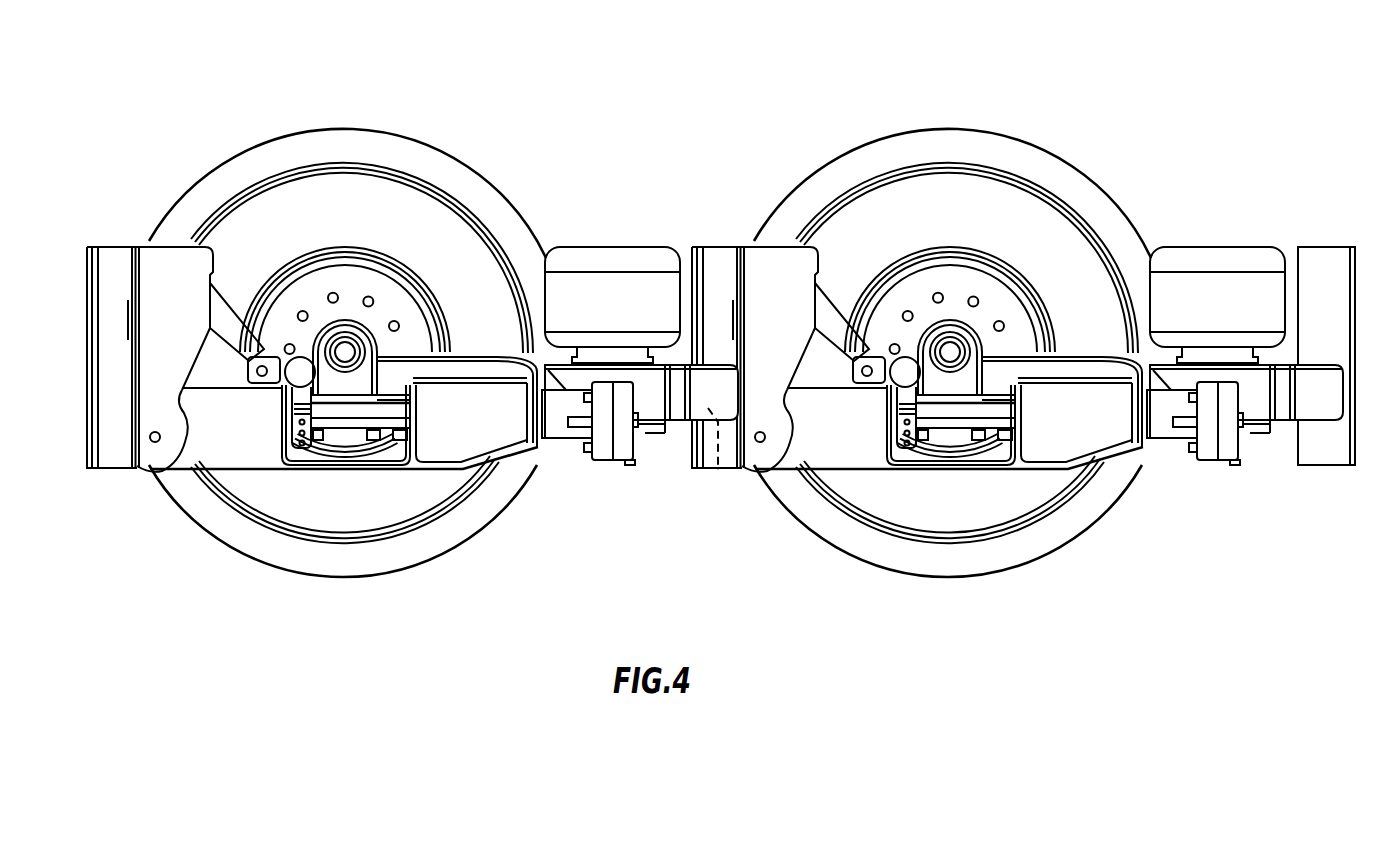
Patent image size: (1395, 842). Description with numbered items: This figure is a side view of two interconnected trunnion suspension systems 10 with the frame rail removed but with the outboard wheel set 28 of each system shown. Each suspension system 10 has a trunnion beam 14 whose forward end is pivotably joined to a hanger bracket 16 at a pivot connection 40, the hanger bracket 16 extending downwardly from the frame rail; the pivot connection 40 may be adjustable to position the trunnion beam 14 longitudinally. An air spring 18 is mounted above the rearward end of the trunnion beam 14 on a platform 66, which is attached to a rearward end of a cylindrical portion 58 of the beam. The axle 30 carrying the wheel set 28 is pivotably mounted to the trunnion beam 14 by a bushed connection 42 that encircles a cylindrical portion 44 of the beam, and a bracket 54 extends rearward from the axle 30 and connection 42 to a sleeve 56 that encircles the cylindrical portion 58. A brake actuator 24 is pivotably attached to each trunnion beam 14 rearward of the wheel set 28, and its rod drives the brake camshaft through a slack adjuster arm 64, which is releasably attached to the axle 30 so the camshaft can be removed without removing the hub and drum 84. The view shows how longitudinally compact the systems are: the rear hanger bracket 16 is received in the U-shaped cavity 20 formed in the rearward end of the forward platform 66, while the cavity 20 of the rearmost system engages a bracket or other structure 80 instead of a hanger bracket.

The suspension system 10 is at (277, 117).
The trunnion beam 14 is at (441, 475).
The hanger bracket 16 is at (135, 247).
The air spring 18 is at (624, 247).
The U-shaped cavity 20 is at (718, 470).
The brake actuator 24 is at (610, 462).
The outboard wheel set 28 is at (468, 166).
The axle 30 is at (350, 333).
The pivot connection 40 is at (155, 443).
The bushed connection 42 is at (347, 447).
The cylindrical portion 44 is at (299, 448).
The bracket 54 is at (498, 355).
The sleeve 56 is at (590, 446).
The cylindrical portion 58 is at (537, 442).
The slack adjuster arm 64 is at (312, 445).
The platform 66 is at (716, 368).
The bracket or other structure 80 is at (1316, 468).
The drum 84 is at (313, 302).